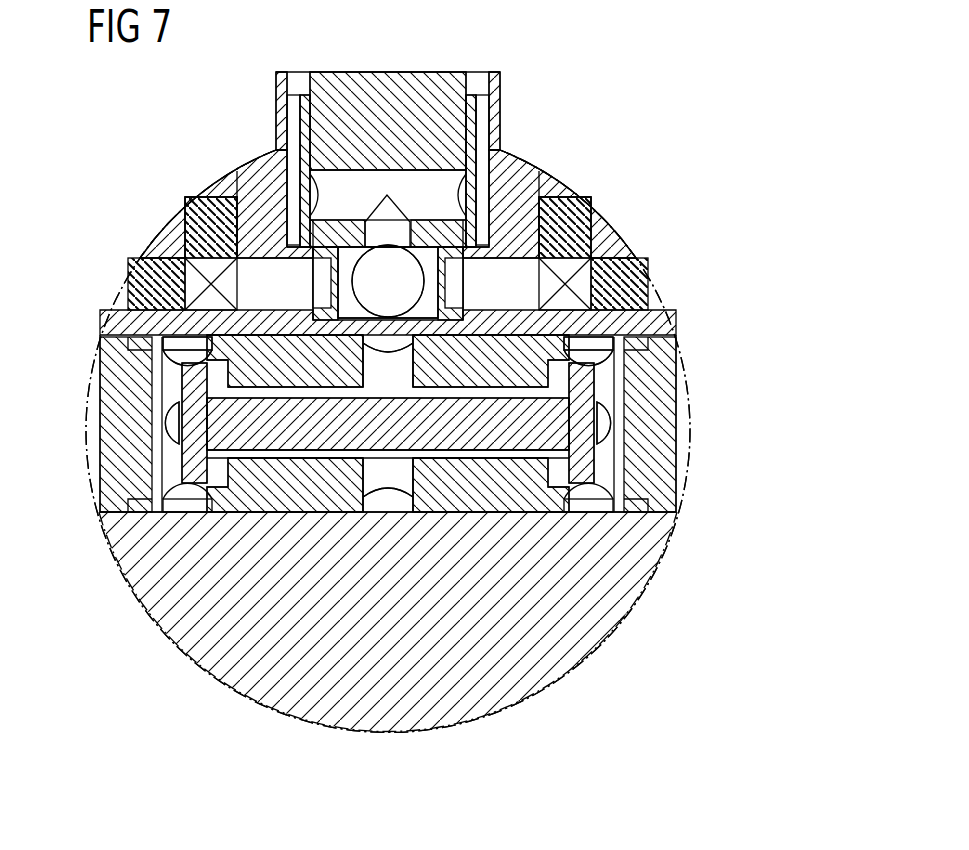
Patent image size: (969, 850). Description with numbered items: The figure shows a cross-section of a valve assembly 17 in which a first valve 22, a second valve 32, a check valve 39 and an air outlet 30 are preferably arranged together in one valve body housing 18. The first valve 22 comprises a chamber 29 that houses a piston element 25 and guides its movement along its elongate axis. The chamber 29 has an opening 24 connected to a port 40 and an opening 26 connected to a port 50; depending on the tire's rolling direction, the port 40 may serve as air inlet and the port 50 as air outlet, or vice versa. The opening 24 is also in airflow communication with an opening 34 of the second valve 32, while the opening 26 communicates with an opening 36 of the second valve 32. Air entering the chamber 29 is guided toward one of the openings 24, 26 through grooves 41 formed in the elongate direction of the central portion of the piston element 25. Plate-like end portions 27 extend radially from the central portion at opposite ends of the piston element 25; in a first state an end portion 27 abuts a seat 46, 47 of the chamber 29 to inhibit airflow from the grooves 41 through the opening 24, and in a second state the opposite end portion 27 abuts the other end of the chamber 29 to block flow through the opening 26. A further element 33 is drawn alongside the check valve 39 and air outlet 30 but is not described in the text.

The valve assembly 17 is at (647, 203).
The valve body housing 18 is at (597, 643).
The first valve 22 is at (543, 520).
The opening 24 is at (566, 392).
The piston element 25 is at (563, 423).
The opening 26 is at (230, 458).
The end portion 27 is at (615, 490).
The chamber 29 is at (438, 470).
The air outlet 30 is at (490, 113).
The second valve 32 is at (470, 233).
The guide strip 33 is at (470, 143).
The opening 34 is at (455, 285).
The opening 36 is at (312, 285).
The check valve 39 is at (437, 67).
The port 40 is at (180, 448).
The grooves 41 is at (325, 448).
The seat 46 is at (563, 340).
The seat 47 is at (213, 337).
The port 50 is at (607, 430).